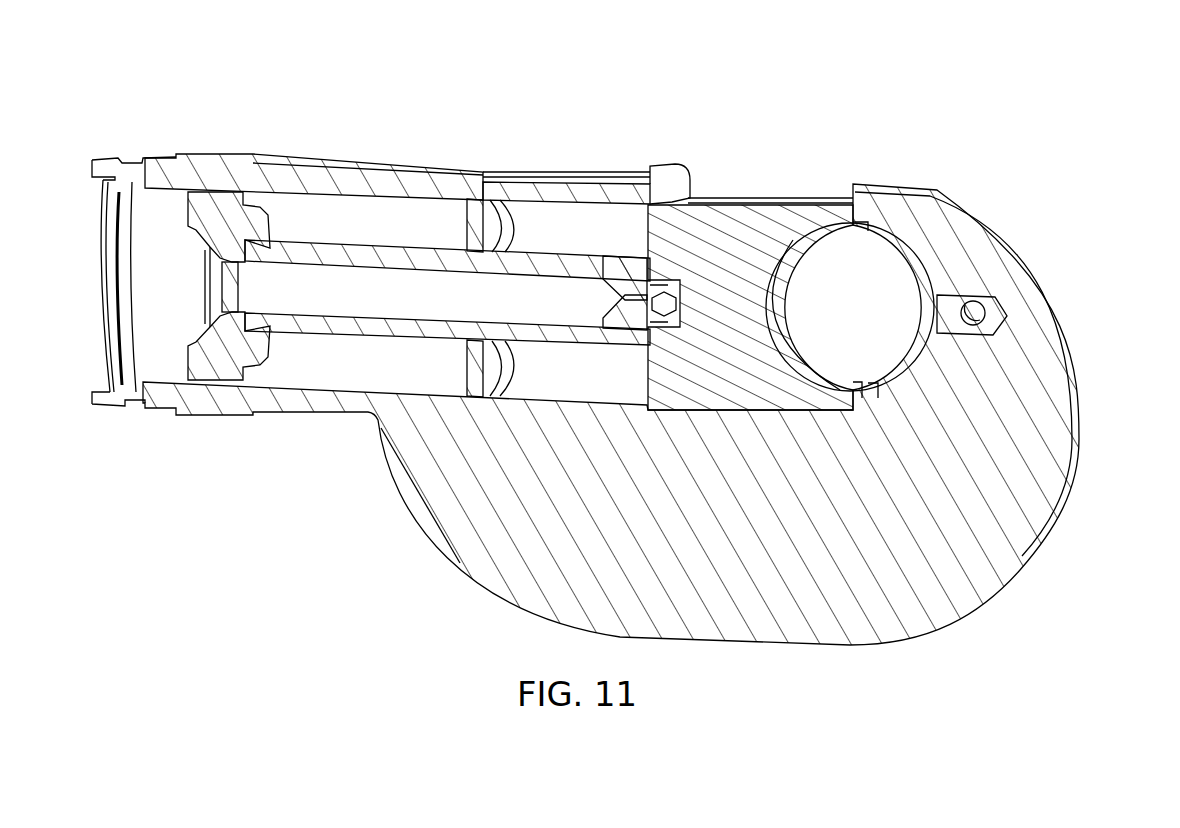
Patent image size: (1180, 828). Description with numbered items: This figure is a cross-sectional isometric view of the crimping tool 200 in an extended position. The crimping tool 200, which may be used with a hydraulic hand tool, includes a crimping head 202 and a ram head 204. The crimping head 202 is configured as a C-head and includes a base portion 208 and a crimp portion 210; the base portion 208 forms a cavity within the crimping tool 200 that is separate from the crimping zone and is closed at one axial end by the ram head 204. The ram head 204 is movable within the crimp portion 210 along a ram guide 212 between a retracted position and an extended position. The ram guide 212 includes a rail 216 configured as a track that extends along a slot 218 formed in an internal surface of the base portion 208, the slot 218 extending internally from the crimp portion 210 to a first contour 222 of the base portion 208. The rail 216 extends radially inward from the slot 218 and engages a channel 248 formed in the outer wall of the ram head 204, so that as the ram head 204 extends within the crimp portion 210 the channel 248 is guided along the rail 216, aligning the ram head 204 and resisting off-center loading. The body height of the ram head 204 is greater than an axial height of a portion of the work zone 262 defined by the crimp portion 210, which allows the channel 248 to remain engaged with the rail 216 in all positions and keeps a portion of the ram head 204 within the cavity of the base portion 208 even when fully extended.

The crimping tool 200 is at (885, 68).
The crimping head 202 is at (1062, 317).
The ram head 204 is at (780, 228).
The base portion 208 is at (203, 440).
The crimp portion 210 is at (1042, 214).
The ram guide 212 is at (702, 176).
The rail 216 is at (586, 192).
The slot 218 is at (533, 181).
The first contour 222 is at (497, 170).
The channel 248 is at (742, 212).
The work zone 262 is at (847, 275).